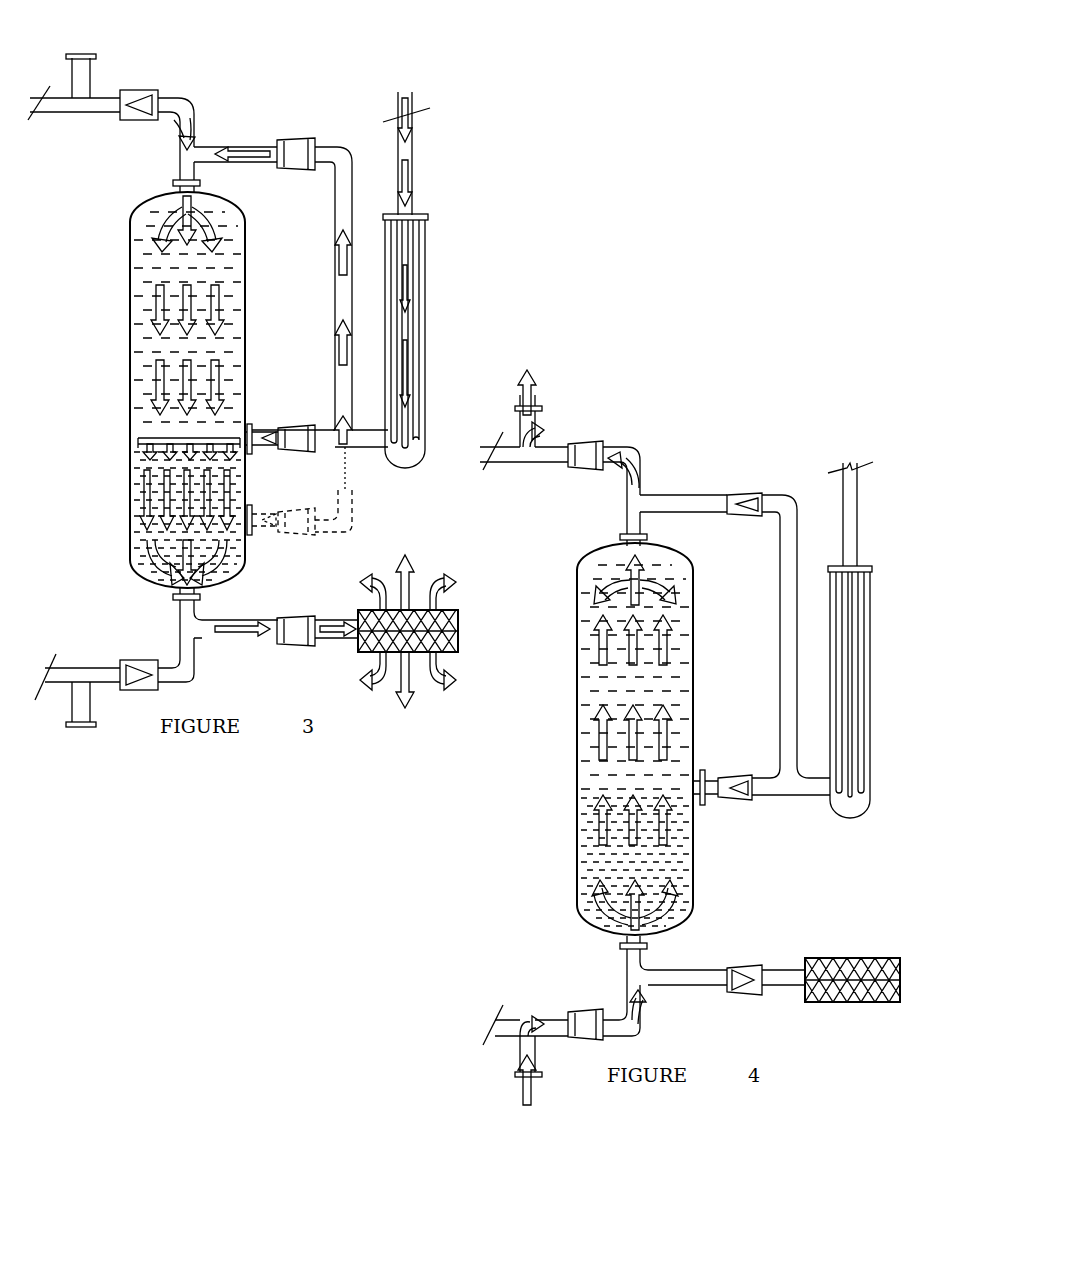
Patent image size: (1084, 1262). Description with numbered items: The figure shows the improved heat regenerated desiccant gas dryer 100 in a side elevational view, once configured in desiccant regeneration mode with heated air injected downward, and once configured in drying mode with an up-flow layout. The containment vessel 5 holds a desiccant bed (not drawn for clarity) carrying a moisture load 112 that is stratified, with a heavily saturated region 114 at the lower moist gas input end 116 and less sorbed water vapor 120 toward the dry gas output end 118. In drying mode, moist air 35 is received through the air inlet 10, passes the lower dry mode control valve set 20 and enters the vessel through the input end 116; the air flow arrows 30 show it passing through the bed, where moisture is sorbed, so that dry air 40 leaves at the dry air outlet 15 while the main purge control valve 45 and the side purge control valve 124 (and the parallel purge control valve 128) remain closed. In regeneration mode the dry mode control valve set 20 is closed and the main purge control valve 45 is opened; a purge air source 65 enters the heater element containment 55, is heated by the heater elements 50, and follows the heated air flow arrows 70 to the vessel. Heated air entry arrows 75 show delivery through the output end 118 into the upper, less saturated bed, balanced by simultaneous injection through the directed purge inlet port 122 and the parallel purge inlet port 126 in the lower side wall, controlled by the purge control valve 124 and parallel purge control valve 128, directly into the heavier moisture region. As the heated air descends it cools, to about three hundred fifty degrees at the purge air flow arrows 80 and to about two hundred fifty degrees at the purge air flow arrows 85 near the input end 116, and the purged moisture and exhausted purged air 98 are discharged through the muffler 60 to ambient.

In FIG. 3, the containment vessel 5 is at (130, 322).
In FIG. 4, the containment vessel 5 is at (577, 696).
In FIG. 4, the air inlet 10 is at (518, 1076).
In FIG. 4, the dry air outlet 15 is at (544, 404).
In FIG. 4, the dry mode control valve set 20 is at (584, 470).
In FIG. 4, the air flow arrows 30 is at (672, 600).
In FIG. 4, the moist air 35 is at (538, 1088).
In FIG. 4, the dry air 40 is at (536, 390).
In FIG. 3, the main purge control valve 45 is at (298, 140).
In FIG. 4, the main purge control valve 45 is at (746, 492).
In FIG. 3, the heater elements 50 is at (412, 336).
In FIG. 3, the heater element containment 55 is at (425, 278).
In FIG. 3, the muffler 60 is at (458, 630).
In FIG. 4, the muffler 60 is at (852, 980).
In FIG. 3, the purge air source 65 is at (415, 107).
In FIG. 3, the heated air flow arrows 70 is at (242, 146).
In FIG. 3, the heated air entry arrows 75 is at (222, 232).
In FIG. 3, the purge air flow arrows 80 is at (228, 322).
In FIG. 3, the purge air flow arrows 85 is at (230, 390).
In FIG. 3, the exhausted purged air 98 is at (420, 578).
In FIG. 3, the heat regenerated desiccant gas dryer 100 is at (197, 72).
In FIG. 4, the heat regenerated desiccant gas dryer 100 is at (660, 372).
In FIG. 3, the moisture load 112 is at (150, 362).
In FIG. 4, the moisture load 112 is at (588, 760).
In FIG. 3, the heavily saturated region 114 is at (142, 520).
In FIG. 4, the heavily saturated region 114 is at (588, 850).
In FIG. 3, the moist gas input end 116 is at (166, 600).
In FIG. 4, the moist gas input end 116 is at (602, 935).
In FIG. 3, the dry gas output end 118 is at (152, 206).
In FIG. 4, the dry gas output end 118 is at (604, 545).
In FIG. 3, the water vapor 120 is at (152, 213).
In FIG. 4, the water vapor 120 is at (596, 567).
In FIG. 3, the directed purge inlet port 122 is at (252, 446).
In FIG. 3, the purge control valve 124 is at (300, 426).
In FIG. 4, the purge control valve 124 is at (734, 775).
In FIG. 3, the parallel purge inlet port 126 is at (250, 536).
In FIG. 3, the parallel purge control valve 128 is at (298, 540).